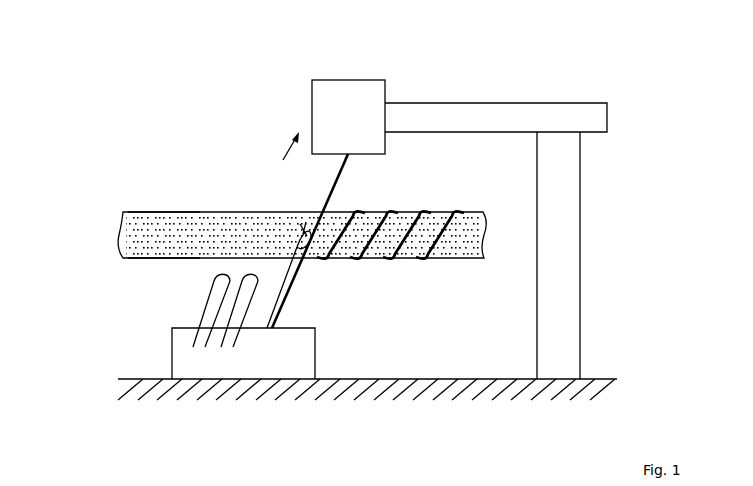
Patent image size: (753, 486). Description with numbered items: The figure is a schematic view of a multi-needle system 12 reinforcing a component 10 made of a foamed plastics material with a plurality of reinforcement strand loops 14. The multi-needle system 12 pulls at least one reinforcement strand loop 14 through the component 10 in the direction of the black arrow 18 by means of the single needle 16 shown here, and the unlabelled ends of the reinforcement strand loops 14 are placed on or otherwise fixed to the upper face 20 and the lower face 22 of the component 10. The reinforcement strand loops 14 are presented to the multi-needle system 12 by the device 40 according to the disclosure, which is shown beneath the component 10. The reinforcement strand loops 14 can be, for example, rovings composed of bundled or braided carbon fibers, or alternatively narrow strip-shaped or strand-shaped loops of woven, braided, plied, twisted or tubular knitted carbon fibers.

The component 10 is at (259, 249).
The multi-needle system 12 is at (440, 58).
The reinforcement strand loops 14 is at (358, 213).
The needle 16 is at (332, 186).
The black arrow 18 is at (283, 160).
The upper face 20 is at (160, 210).
The lower face 22 is at (150, 261).
The device 40 is at (278, 364).